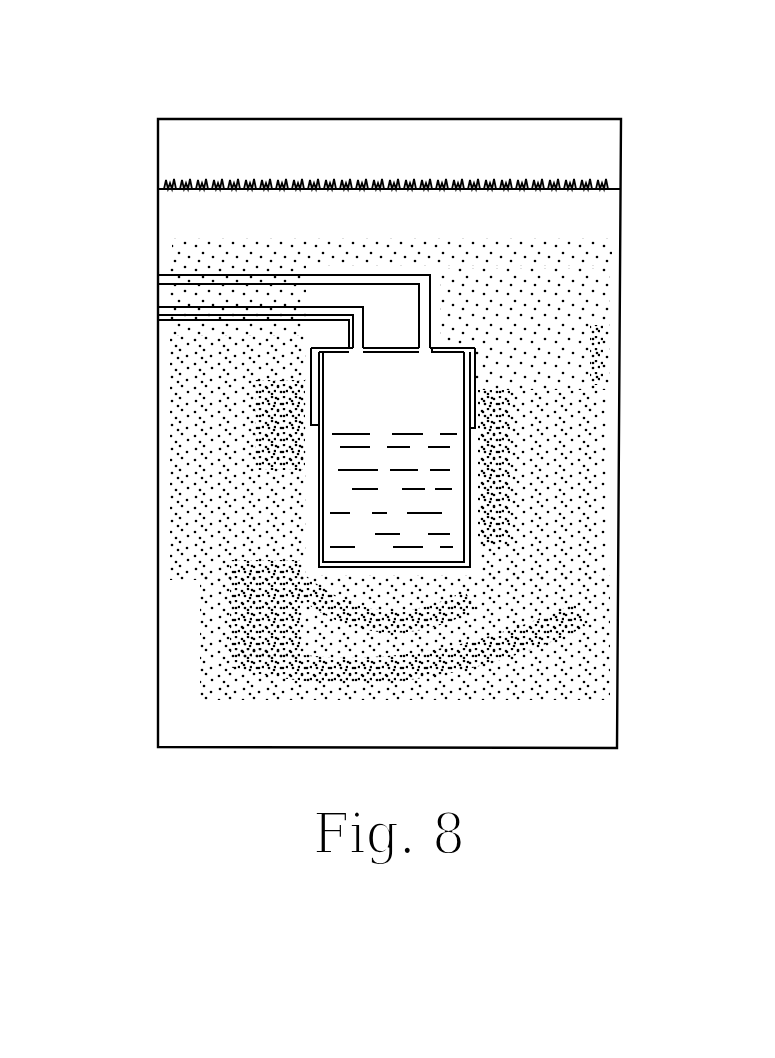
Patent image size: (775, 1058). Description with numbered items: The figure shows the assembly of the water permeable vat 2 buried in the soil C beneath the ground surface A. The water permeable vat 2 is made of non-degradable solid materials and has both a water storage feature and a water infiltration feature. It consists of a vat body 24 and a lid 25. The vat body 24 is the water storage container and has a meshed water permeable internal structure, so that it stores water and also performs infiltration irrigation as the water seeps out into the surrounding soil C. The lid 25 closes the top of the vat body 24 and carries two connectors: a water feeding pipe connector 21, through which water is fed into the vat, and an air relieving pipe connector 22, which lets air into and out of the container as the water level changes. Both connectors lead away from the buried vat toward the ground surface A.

The water permeable vat 2 is at (733, 93).
The ground surface A is at (180, 190).
The air relieving pipe connector 22 is at (157, 277).
The water feeding pipe connector 21 is at (157, 312).
The lid 25 is at (309, 402).
The vat body 24 is at (318, 517).
The soil C is at (255, 640).